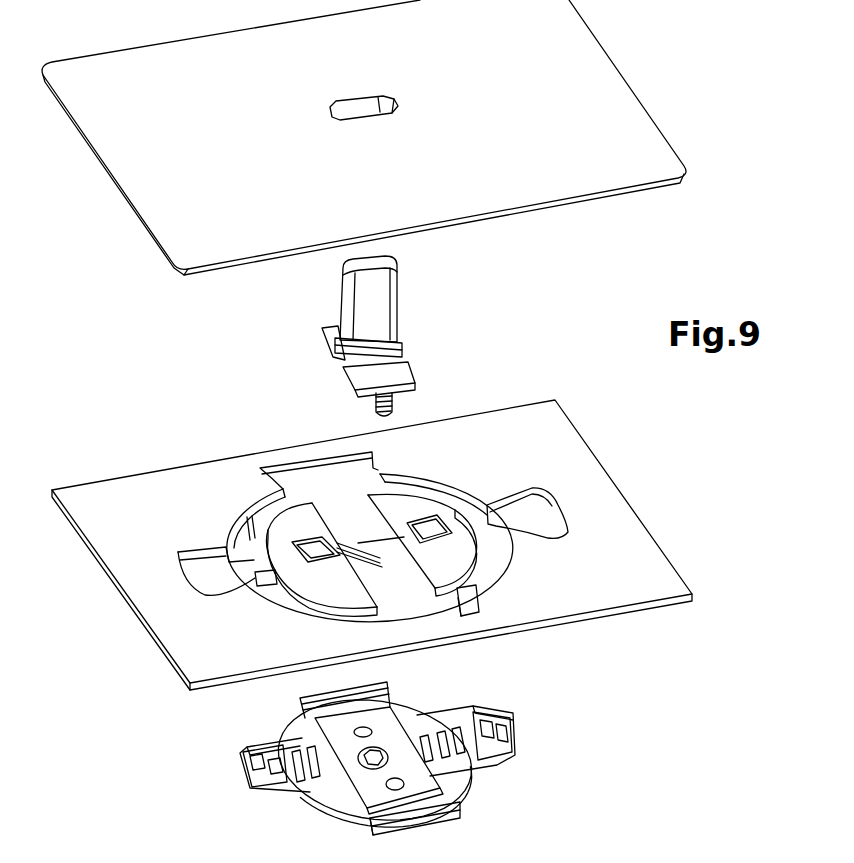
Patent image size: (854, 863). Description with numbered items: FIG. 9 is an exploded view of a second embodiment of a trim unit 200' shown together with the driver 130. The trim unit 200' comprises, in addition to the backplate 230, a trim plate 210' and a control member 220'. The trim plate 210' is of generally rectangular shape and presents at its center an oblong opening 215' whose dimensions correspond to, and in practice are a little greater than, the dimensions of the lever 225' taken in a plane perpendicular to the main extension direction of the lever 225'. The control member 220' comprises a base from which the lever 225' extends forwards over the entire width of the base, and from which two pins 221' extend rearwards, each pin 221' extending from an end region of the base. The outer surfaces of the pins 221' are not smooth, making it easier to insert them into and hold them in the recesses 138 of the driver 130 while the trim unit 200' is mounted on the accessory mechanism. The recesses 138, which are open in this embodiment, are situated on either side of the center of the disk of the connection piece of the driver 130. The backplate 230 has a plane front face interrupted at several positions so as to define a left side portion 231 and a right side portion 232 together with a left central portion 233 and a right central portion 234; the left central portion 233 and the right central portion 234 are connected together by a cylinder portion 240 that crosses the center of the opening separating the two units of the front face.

The trim unit 200' is at (447, 431).
The trim plate 210' is at (384, 431).
The oblong opening 215' is at (323, 92).
The control member 220' is at (378, 336).
The lever 225' is at (319, 306).
The pin 221' is at (446, 377).
The backplate 230 is at (668, 549).
The left side portion 231 is at (124, 510).
The right side portion 232 is at (557, 448).
The left central portion 233 is at (333, 577).
The right central portion 234 is at (463, 543).
The cylinder portion 240 is at (380, 565).
The driver 130 is at (490, 785).
The recesses 138 is at (388, 782).